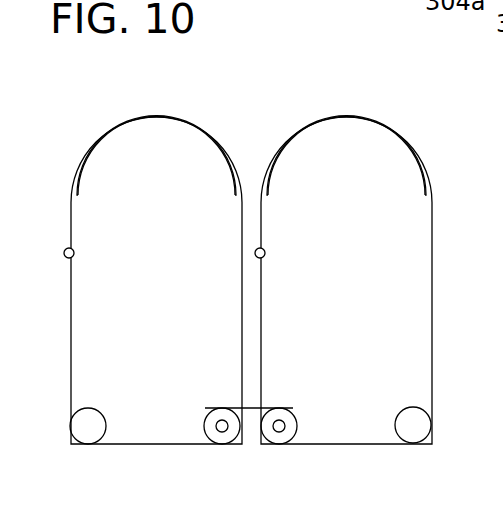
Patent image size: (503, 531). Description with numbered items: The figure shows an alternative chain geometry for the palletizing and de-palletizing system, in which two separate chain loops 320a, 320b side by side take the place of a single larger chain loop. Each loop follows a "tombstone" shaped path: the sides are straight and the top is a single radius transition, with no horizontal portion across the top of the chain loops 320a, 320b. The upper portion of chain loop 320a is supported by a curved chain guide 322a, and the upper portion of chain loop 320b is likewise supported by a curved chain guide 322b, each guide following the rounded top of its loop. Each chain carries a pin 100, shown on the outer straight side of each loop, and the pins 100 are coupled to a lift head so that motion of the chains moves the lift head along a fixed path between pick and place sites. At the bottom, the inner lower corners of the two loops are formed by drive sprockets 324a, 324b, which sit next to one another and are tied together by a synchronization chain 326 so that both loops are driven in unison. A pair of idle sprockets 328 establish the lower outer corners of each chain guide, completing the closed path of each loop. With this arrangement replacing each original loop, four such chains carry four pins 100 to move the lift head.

The chain loop 320a is at (160, 112).
The chain loop 320b is at (316, 112).
The curved chain guide 322a is at (145, 132).
The curved chain guide 322b is at (333, 133).
The pin 100 is at (74, 256).
The drive sprocket 324a is at (214, 438).
The drive sprocket 324b is at (288, 438).
The synchronization chain 326 is at (249, 406).
The idle sprocket 328 is at (72, 432).